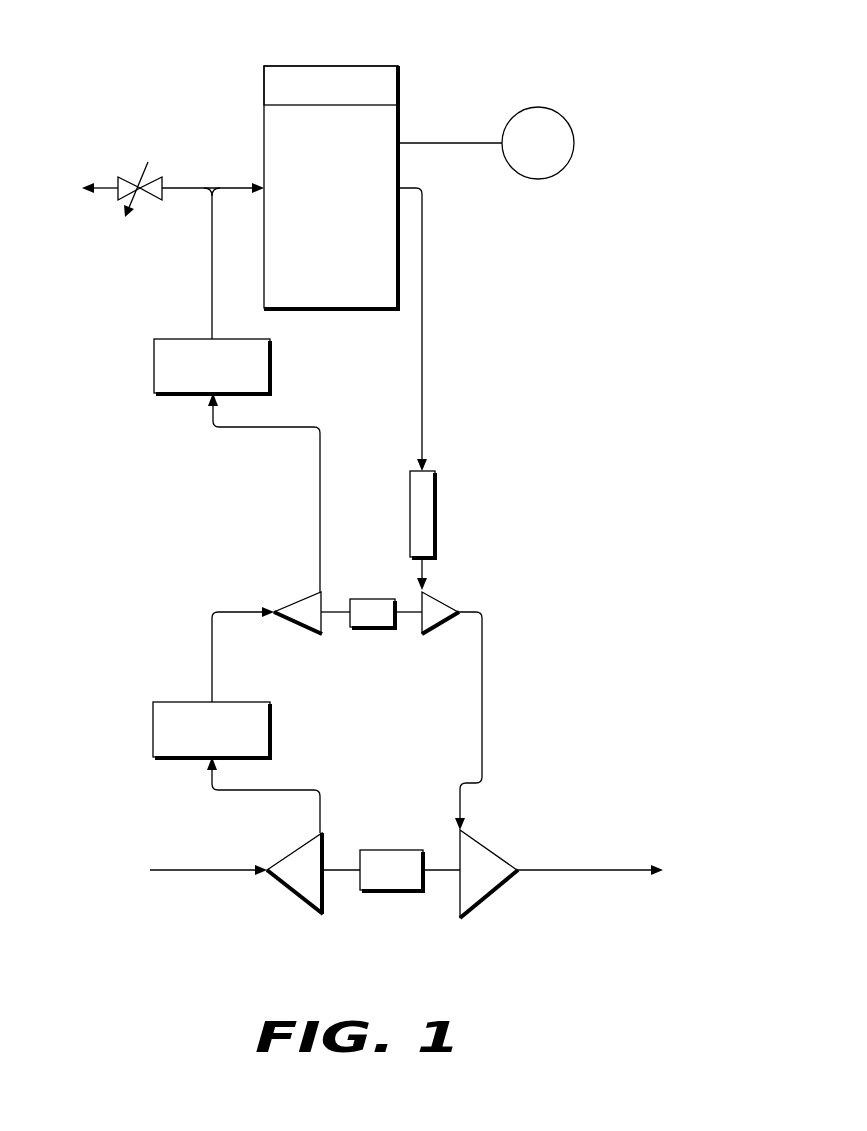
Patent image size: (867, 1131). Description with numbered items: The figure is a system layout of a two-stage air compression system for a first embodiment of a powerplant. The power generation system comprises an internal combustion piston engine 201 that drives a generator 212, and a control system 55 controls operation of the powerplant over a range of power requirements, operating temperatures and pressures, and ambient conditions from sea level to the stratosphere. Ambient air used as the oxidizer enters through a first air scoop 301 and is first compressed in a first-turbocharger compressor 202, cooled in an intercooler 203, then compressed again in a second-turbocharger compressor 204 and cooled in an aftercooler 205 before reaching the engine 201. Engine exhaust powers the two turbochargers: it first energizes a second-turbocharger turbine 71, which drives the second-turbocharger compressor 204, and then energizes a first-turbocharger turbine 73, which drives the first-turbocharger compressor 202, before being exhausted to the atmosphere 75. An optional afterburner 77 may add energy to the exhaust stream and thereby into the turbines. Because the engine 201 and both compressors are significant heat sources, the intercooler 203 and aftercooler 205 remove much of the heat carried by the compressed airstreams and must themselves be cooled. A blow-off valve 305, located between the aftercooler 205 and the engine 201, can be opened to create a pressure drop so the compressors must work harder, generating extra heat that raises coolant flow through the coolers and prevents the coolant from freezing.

The internal combustion piston engine 201 is at (315, 256).
The generator 212 is at (392, 87).
The control system 55 is at (527, 156).
The blow-off valve 305 is at (132, 175).
The aftercooler 205 is at (172, 365).
The second-turbocharger compressor 204 is at (305, 597).
The second-turbocharger turbine 71 is at (438, 598).
The afterburner 77 is at (435, 515).
The intercooler 203 is at (170, 725).
The first air scoop 301 is at (160, 840).
The first-turbocharger compressor 202 is at (290, 892).
The first-turbocharger turbine 73 is at (487, 897).
The atmosphere 75 is at (633, 840).